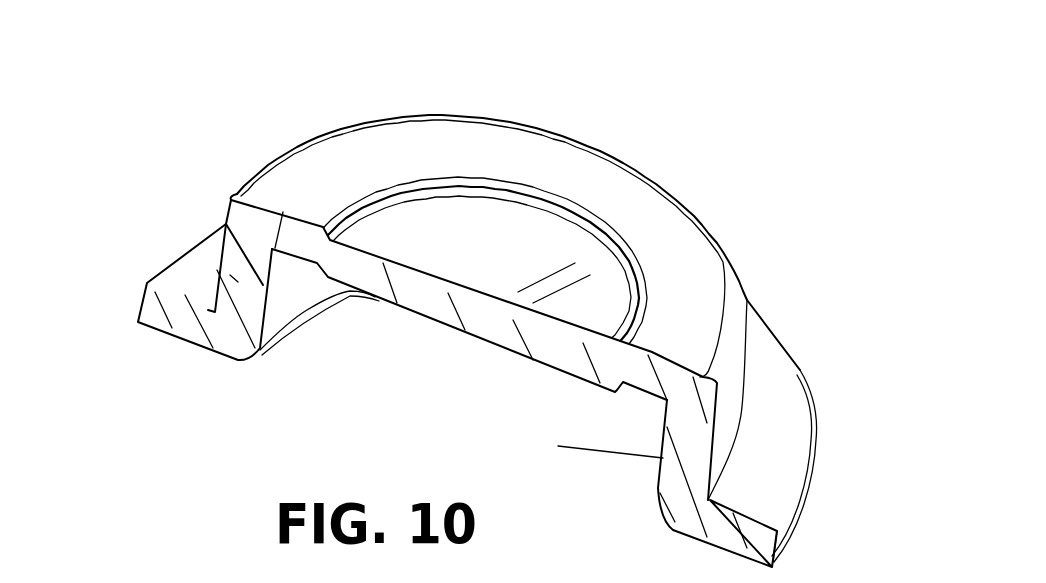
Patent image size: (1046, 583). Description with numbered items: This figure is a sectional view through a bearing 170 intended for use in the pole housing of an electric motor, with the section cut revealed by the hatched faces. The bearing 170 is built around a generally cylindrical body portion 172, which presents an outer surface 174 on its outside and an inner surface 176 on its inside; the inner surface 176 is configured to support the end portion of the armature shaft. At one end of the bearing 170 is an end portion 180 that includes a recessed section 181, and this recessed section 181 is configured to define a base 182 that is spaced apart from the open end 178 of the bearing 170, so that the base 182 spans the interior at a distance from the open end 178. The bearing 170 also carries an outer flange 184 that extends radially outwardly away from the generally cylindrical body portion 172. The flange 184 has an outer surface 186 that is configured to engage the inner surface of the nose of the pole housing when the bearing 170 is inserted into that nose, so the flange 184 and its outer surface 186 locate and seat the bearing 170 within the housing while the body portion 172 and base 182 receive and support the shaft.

The bearing 170 is at (248, 90).
The generally cylindrical body portion 172 is at (776, 280).
The outer surface 174 is at (240, 280).
The inner surface 176 is at (663, 457).
The open end 178 is at (338, 376).
The end portion 180 is at (419, 151).
The recessed section 181 is at (494, 263).
The base 182 is at (424, 318).
The outer flange 184 is at (770, 418).
The outer surface 186 is at (786, 535).